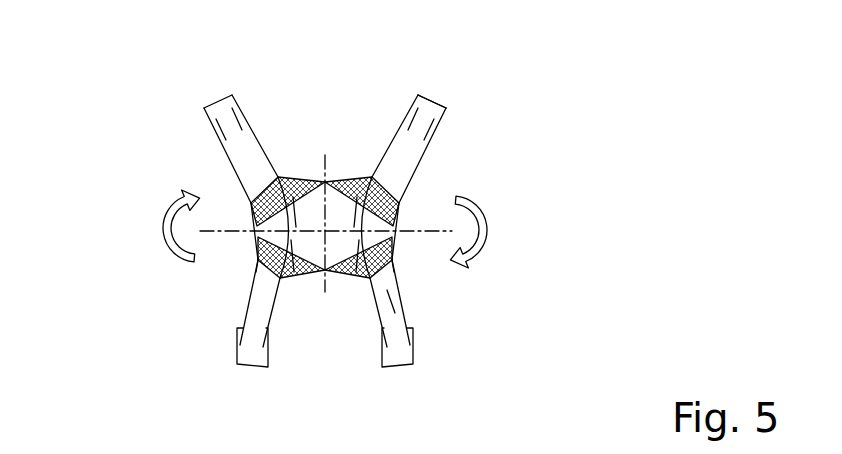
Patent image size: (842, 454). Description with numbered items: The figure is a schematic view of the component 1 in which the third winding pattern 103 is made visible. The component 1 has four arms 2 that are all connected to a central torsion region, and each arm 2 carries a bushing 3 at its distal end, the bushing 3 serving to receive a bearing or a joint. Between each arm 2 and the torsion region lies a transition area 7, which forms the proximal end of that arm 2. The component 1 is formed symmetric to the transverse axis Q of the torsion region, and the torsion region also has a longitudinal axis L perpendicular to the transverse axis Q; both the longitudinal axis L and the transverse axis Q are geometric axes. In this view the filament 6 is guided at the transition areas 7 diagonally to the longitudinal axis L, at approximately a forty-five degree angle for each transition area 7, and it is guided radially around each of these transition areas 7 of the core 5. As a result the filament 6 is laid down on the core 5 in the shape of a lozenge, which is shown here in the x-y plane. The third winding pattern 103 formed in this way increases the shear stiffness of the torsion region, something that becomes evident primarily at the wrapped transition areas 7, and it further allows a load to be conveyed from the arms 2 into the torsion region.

The component 1 is at (437, 170).
The arm 2 is at (242, 155).
The bushing 3 is at (222, 112).
The core 5 is at (387, 290).
The filament 6 is at (257, 271).
The transition area 7 is at (240, 208).
The third winding pattern 103 is at (390, 275).
The longitudinal axis L is at (307, 233).
The transverse axis Q is at (325, 168).
The xy plane x-y is at (326, 199).